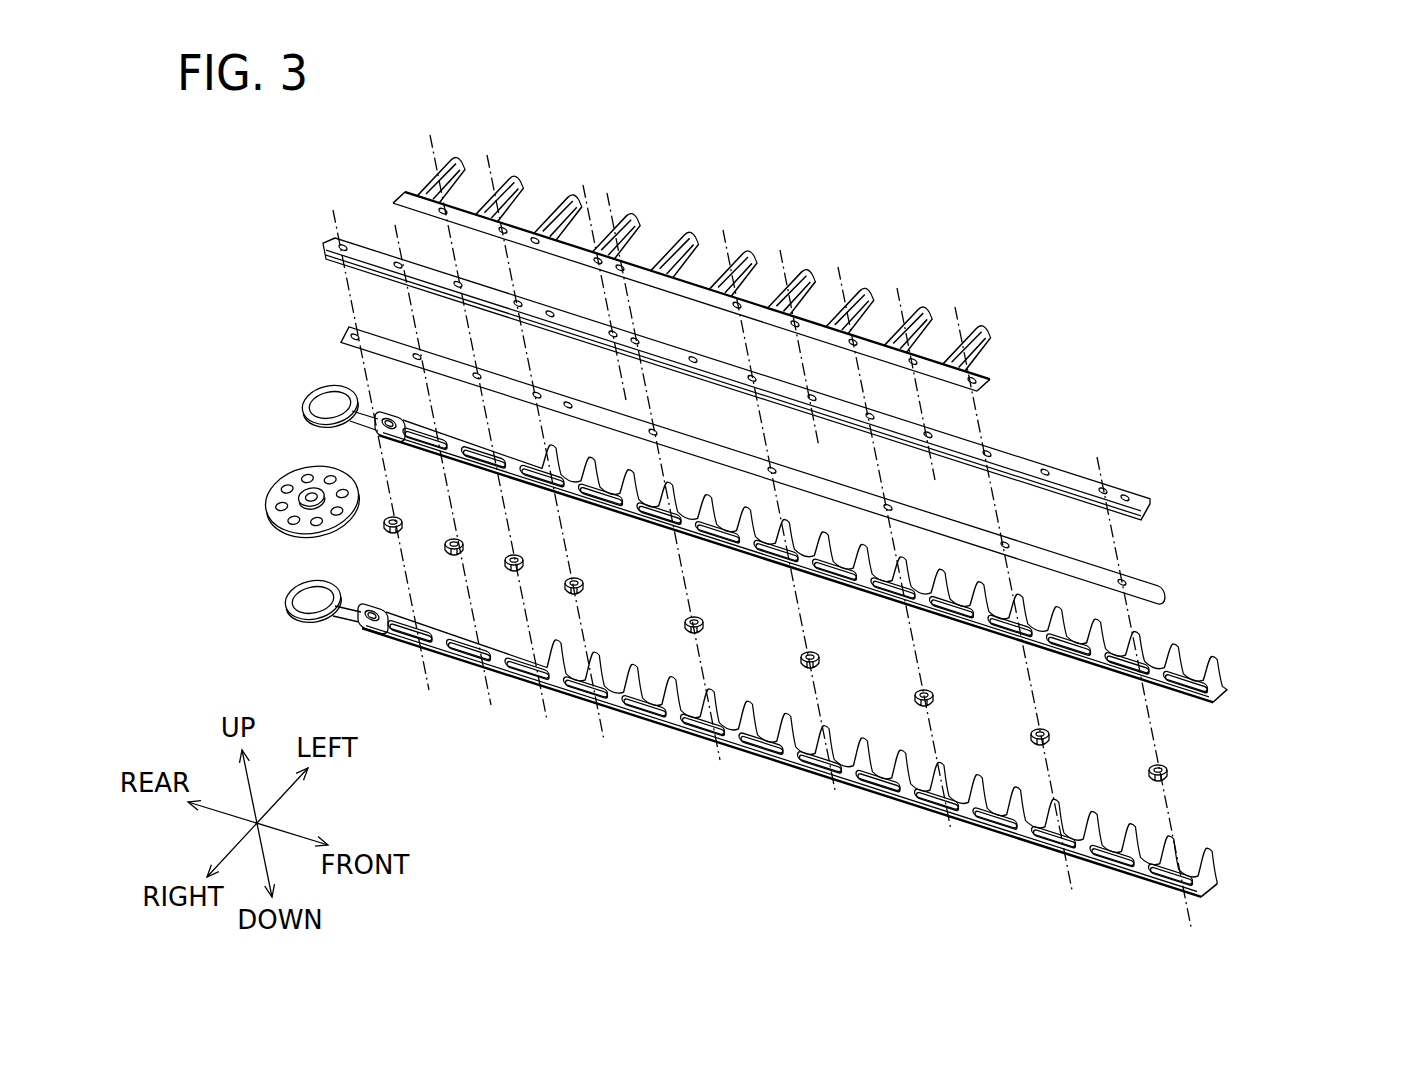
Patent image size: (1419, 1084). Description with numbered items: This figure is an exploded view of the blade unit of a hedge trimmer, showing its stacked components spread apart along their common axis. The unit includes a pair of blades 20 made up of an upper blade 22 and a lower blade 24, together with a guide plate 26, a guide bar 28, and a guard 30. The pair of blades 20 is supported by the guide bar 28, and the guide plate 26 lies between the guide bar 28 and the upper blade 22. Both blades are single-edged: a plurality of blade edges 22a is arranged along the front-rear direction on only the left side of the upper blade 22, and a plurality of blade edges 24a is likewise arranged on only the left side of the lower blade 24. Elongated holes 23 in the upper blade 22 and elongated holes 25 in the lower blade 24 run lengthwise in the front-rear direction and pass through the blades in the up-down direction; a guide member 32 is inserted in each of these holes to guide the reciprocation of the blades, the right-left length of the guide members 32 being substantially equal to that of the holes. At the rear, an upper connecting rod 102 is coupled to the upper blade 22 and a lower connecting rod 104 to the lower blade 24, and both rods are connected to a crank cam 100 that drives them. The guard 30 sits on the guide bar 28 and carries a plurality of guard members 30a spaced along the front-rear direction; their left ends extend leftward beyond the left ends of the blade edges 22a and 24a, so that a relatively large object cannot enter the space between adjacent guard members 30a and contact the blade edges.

The pair of blades 20 is at (885, 674).
The upper blade 22 is at (868, 592).
The blade edges 22a is at (1213, 663).
The elongated holes 23 is at (1123, 672).
The lower blade 24 is at (860, 768).
The blade edges 24a is at (1208, 860).
The elongated holes 25 is at (1113, 865).
The guide plate 26 is at (1153, 592).
The guide bar 28 is at (1135, 503).
The guard 30 is at (724, 270).
The guard members 30a is at (978, 333).
The guide member 32 is at (1035, 725).
The crank cam 100 is at (263, 493).
The upper connecting rod 102 is at (307, 400).
The lower connecting rod 104 is at (287, 600).